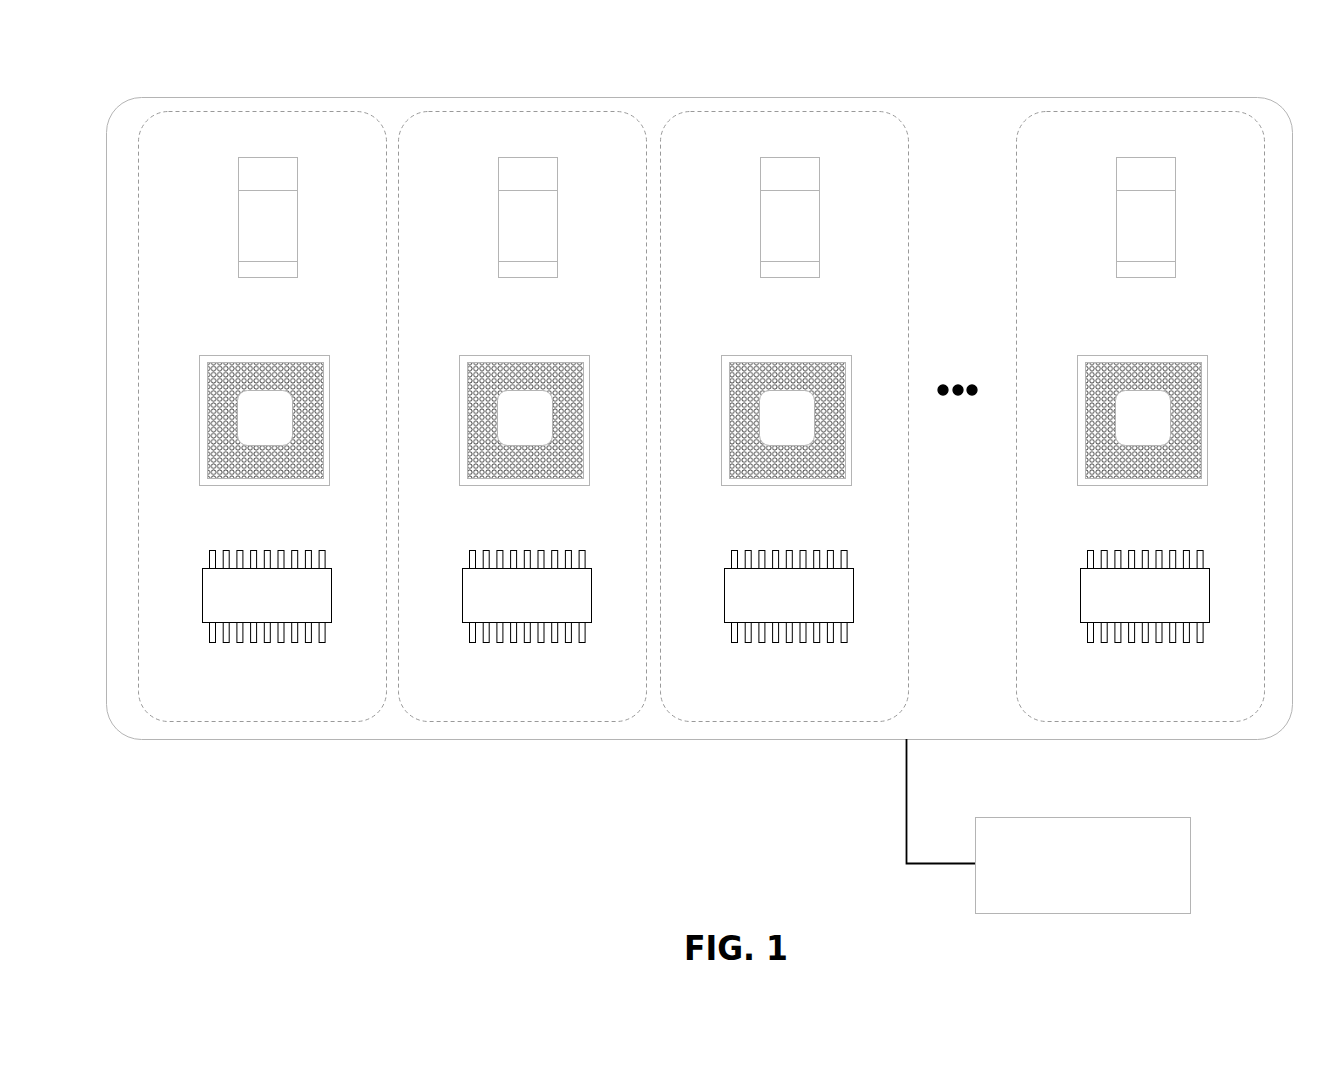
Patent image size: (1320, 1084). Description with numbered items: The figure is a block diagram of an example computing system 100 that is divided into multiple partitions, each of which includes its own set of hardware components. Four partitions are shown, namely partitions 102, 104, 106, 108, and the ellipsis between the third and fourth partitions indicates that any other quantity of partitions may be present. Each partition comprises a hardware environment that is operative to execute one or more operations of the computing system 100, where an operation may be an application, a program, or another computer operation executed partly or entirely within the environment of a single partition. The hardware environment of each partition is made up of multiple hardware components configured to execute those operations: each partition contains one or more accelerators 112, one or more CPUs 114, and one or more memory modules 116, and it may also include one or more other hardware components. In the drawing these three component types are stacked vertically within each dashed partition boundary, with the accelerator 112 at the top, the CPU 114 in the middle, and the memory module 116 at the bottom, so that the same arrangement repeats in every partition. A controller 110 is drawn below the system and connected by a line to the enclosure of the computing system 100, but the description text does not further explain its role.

The computing system 100 is at (318, 97).
The partition 102 is at (243, 780).
The partition 104 is at (503, 780).
The partition 106 is at (765, 780).
The partition 108 is at (1121, 780).
The controller 110 is at (1063, 888).
The accelerator 112 is at (248, 236).
The CPU 114 is at (284, 428).
The memory module 116 is at (286, 606).